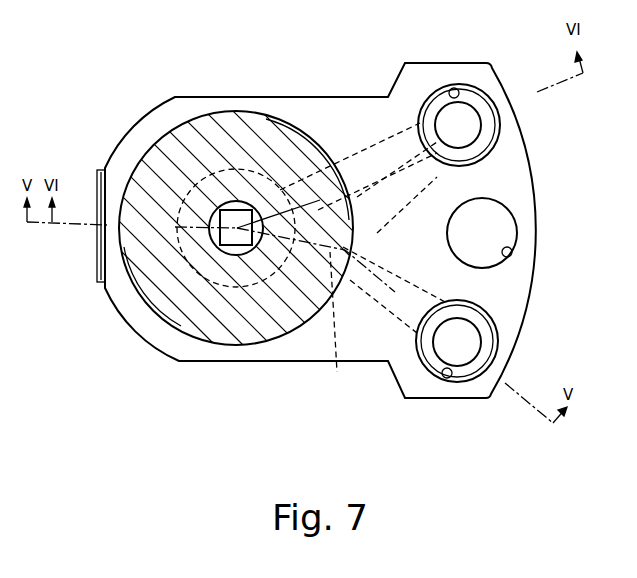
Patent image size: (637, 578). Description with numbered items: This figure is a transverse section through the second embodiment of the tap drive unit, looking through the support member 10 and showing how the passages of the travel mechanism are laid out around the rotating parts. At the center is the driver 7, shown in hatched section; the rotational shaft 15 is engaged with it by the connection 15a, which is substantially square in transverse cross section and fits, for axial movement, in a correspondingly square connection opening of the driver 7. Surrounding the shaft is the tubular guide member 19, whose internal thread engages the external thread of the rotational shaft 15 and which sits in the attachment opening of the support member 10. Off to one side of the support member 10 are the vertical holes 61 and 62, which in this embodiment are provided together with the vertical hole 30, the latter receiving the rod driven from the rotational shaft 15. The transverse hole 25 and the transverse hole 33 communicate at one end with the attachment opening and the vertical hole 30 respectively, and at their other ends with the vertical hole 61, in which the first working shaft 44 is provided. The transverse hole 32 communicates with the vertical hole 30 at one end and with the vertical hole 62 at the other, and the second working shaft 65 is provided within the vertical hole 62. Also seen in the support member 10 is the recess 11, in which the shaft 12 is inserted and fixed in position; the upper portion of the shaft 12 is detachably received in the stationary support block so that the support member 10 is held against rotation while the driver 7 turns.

The support member 10 is at (210, 96).
The driver 7 is at (196, 338).
The rotational shaft 15 is at (222, 203).
The connection 15a is at (238, 208).
The tubular guide member 19 is at (240, 290).
The transverse hole 25 is at (343, 160).
The transverse hole 33 is at (394, 220).
The transverse hole 32 is at (367, 292).
The vertical hole 30 is at (338, 324).
The first working shaft 44 is at (472, 123).
The vertical hole 61 is at (460, 91).
The second working shaft 65 is at (470, 338).
The vertical hole 62 is at (457, 376).
The shaft 12 is at (503, 222).
The recess 11 is at (509, 263).